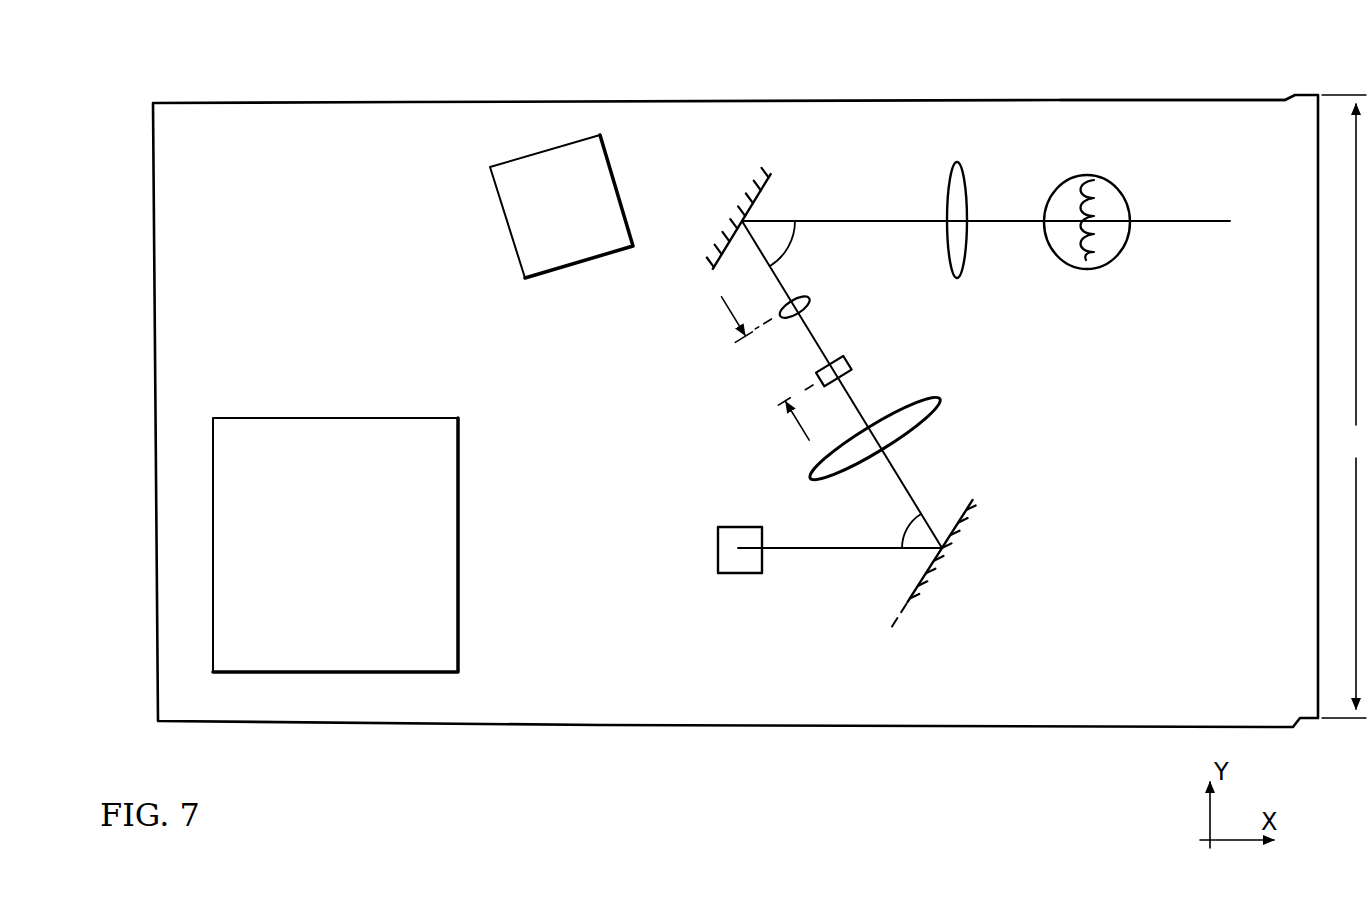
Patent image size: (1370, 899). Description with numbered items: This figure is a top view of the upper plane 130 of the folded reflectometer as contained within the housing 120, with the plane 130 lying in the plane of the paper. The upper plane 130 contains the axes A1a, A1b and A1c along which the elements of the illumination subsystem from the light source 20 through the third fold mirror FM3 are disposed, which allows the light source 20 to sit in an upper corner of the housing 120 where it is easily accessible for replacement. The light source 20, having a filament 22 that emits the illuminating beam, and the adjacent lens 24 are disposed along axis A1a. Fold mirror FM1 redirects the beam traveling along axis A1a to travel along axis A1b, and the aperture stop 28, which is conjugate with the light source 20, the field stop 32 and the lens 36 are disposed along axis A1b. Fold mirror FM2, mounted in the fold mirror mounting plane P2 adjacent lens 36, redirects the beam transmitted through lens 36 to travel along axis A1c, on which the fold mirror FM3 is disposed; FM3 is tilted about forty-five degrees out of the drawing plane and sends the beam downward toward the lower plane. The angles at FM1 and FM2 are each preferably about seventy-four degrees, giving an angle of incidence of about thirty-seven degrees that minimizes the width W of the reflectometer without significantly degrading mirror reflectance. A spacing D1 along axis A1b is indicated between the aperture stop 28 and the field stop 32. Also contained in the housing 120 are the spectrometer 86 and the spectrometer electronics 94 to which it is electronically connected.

The housing 120 is at (409, 95).
The upper plane 130 is at (1062, 124).
The spectrometer 86 is at (578, 217).
The spectrometer electronics 94 is at (355, 542).
The light source 20 is at (1118, 194).
The filament 22 is at (1097, 252).
The lens 24 is at (963, 268).
The aperture stop 28 is at (812, 291).
The field stop 32 is at (853, 364).
The lens 36 is at (932, 402).
The fold mirror FM1 is at (745, 203).
The fold mirror FM2 is at (952, 552).
The fold mirror FM3 is at (718, 541).
The axis A1a is at (1205, 222).
The axis A1b is at (818, 332).
The axis A1c is at (863, 556).
The spacing distance D1 is at (773, 363).
The fold mirror mounting plane P2 is at (892, 642).
The width W is at (1344, 406).